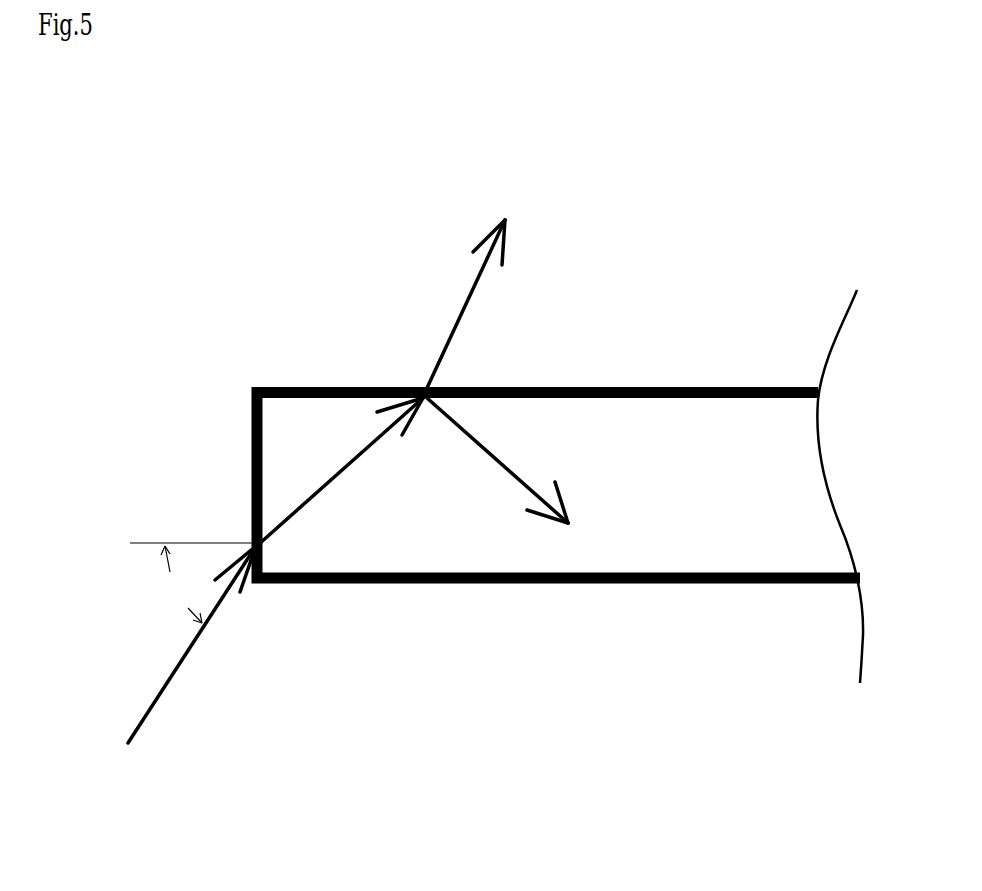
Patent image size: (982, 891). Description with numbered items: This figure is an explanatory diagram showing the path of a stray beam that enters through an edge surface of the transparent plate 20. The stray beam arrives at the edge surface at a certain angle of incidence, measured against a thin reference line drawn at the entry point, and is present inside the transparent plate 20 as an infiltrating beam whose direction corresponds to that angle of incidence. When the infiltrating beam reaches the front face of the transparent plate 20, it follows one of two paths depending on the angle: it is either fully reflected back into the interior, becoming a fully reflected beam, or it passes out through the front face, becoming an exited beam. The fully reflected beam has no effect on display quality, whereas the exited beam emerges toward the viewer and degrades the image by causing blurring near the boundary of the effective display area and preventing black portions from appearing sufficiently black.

The transparent plate 20 is at (733, 428).